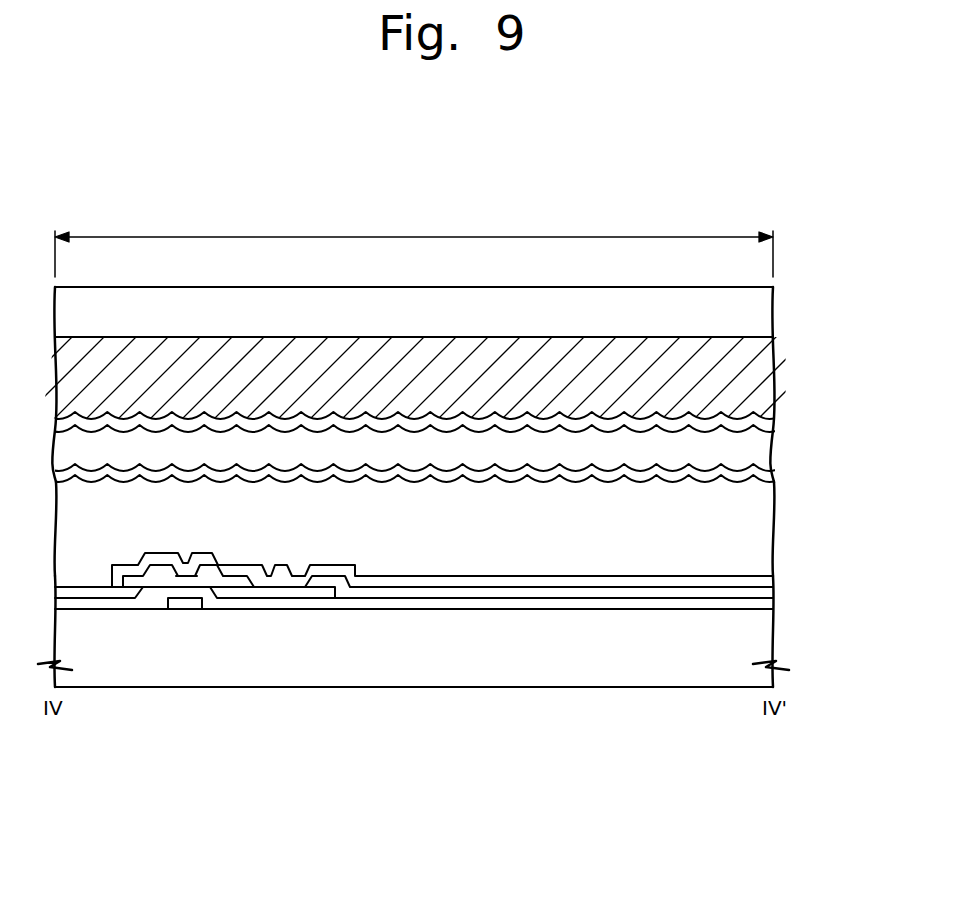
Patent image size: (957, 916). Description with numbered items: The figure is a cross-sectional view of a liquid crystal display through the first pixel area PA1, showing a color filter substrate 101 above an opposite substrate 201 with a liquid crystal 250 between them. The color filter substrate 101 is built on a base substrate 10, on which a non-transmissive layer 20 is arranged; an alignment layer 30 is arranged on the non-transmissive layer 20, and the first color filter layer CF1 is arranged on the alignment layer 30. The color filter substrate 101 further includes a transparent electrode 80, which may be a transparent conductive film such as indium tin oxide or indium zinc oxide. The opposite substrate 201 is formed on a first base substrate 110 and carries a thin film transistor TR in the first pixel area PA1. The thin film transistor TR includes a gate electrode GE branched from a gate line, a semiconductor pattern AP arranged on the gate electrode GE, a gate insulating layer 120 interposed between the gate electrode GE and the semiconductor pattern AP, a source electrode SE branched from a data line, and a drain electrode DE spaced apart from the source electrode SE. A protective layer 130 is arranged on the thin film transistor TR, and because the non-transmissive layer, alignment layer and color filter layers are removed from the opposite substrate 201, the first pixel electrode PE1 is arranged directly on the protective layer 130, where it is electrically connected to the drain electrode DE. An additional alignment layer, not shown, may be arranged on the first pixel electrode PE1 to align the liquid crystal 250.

The base substrate 10 is at (762, 300).
The non-transmissive layer 20 is at (762, 363).
The alignment layer 30 is at (762, 421).
The first color filter layer CF1 is at (762, 447).
The transparent electrode 80 is at (762, 479).
The color filter substrate 101 is at (855, 295).
The liquid crystal 250 is at (757, 530).
The first pixel electrode PE1 is at (772, 581).
The protective layer 130 is at (772, 588).
The gate insulating layer 120 is at (772, 599).
The first base substrate 110 is at (757, 645).
The opposite substrate 201 is at (855, 552).
The source electrode SE is at (127, 590).
The gate electrode GE is at (180, 606).
The semiconductor pattern AP is at (222, 594).
The drain electrode DE is at (257, 593).
The thin film transistor TR is at (268, 756).
The first pixel area PA1 is at (414, 243).